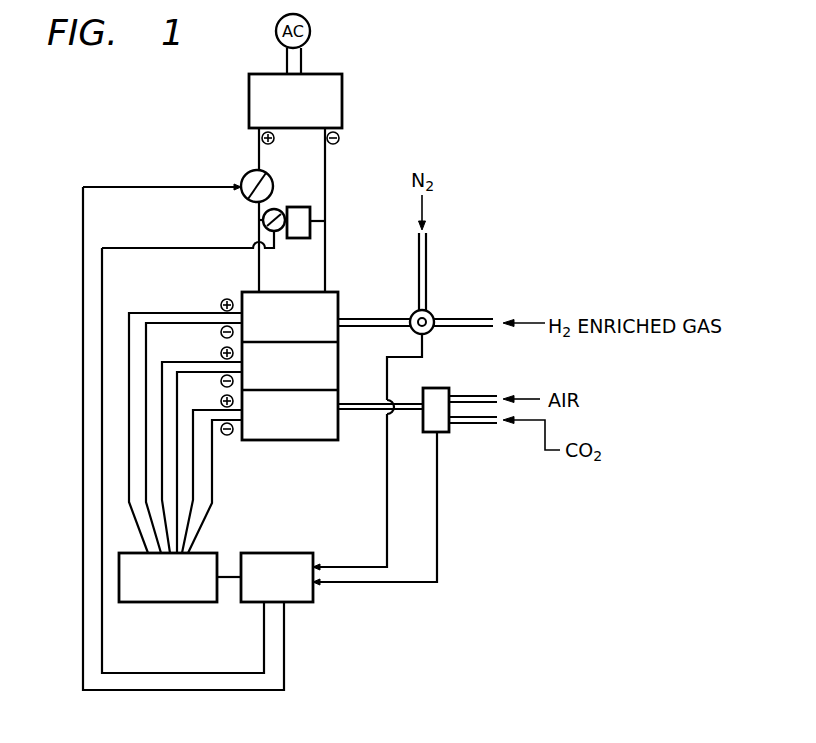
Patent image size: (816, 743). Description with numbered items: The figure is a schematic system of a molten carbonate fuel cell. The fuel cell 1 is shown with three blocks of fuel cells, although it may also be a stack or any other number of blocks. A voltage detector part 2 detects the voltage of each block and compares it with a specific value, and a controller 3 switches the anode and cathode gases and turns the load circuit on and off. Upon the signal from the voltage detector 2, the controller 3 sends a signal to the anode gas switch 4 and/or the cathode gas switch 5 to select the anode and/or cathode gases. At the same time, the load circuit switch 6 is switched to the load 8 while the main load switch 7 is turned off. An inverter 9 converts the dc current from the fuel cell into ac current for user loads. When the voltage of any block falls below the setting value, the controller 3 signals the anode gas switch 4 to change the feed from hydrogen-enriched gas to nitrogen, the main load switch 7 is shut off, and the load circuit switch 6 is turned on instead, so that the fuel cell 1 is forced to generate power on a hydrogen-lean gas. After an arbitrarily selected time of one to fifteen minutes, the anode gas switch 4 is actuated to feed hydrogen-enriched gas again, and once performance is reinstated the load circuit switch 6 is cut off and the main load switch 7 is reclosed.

The fuel cell 1 is at (341, 302).
The voltage detector part 2 is at (180, 604).
The controller 3 is at (276, 552).
The anode gas switch 4 is at (434, 312).
The cathode gas switch 5 is at (441, 387).
The load circuit switch 6 is at (278, 209).
The main load switch 7 is at (242, 173).
The load 8 is at (303, 206).
The inverter 9 is at (343, 106).